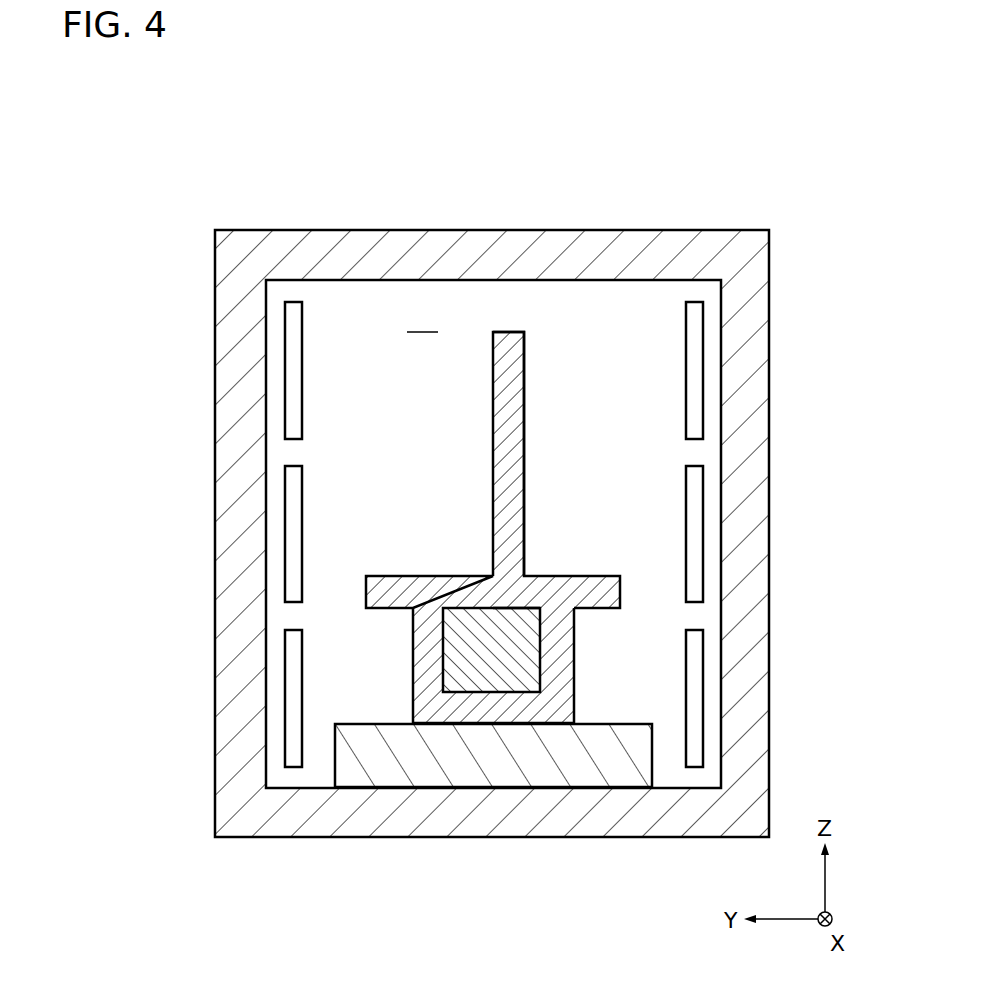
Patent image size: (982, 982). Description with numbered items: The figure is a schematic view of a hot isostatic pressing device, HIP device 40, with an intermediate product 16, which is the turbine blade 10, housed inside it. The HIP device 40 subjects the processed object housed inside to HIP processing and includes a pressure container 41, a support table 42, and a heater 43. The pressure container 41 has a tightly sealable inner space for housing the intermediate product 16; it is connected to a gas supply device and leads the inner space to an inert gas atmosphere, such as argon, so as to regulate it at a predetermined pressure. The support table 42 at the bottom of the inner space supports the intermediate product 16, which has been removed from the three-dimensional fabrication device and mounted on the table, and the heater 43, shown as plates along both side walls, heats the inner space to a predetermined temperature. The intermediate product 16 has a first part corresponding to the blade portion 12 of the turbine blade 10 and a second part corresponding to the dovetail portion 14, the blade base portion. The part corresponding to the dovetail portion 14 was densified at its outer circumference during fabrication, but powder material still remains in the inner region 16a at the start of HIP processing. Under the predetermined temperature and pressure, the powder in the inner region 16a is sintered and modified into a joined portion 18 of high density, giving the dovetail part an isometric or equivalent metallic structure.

The HIP device 40 is at (705, 157).
The pressure container 41 is at (750, 355).
The support table 42 is at (570, 760).
The heater 43 is at (288, 363).
The turbine blade 10 is at (545, 435).
The blade portion 12 is at (358, 330).
The dovetail portion 14 is at (360, 614).
The intermediate product 16 is at (492, 447).
The inner region 16a is at (532, 620).
The joined portion 18 is at (510, 650).